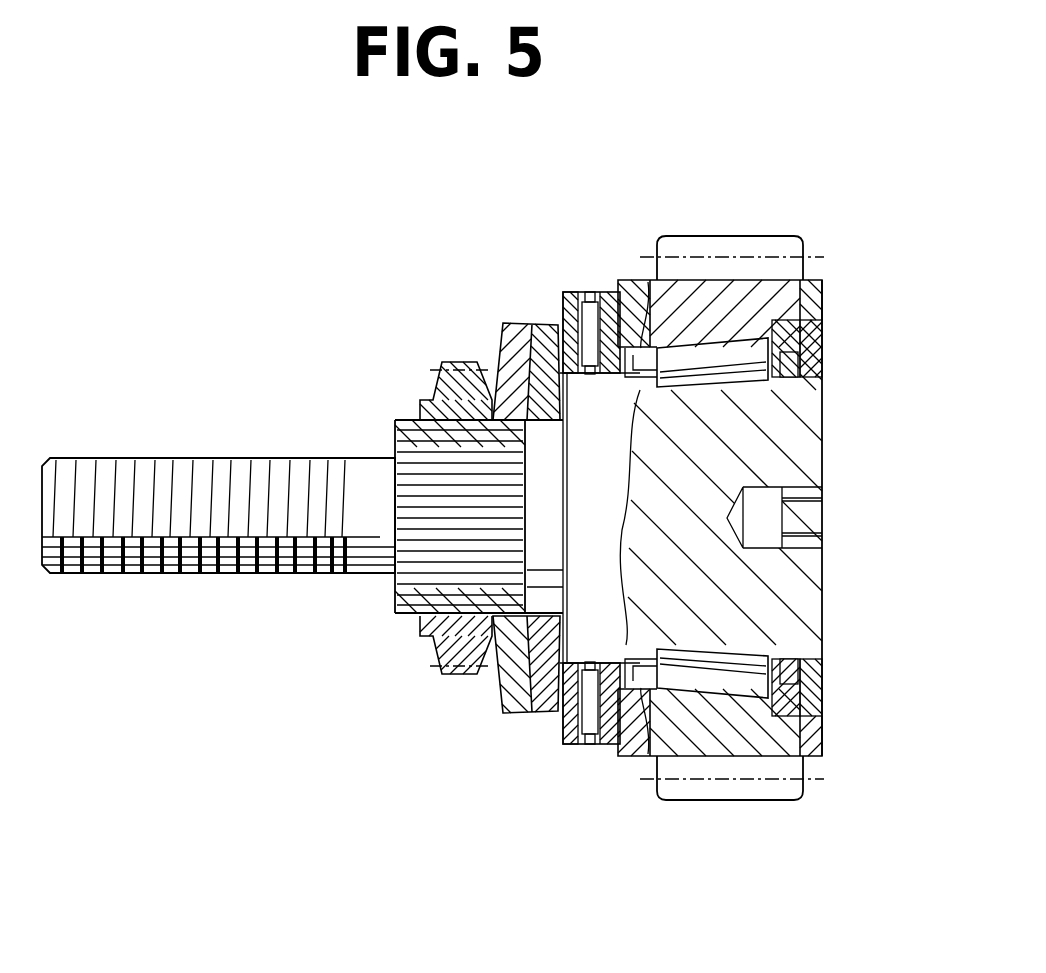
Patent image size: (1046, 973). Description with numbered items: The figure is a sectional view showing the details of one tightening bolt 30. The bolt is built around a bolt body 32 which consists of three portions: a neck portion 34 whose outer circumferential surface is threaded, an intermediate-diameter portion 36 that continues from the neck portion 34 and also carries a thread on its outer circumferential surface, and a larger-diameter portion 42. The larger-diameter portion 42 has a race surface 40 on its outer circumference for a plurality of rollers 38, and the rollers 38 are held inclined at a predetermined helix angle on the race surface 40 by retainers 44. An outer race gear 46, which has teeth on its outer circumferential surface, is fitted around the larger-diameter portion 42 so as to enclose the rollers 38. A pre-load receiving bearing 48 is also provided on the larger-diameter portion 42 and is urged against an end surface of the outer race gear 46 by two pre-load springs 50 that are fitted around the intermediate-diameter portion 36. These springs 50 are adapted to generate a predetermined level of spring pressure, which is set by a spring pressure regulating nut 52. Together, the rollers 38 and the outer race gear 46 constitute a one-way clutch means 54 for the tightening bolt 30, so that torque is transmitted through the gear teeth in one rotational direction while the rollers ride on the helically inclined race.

The tightening bolt 30 is at (376, 797).
The bolt body 32 is at (347, 594).
The neck portion 34 is at (240, 457).
The intermediate-diameter portion 36 is at (412, 470).
The rollers 38 is at (735, 400).
The race surface 40 is at (735, 385).
The larger-diameter portion 42 is at (793, 583).
The retainers 44 is at (628, 292).
The outer race gear 46 is at (822, 287).
The pre-load receiving bearing 48 is at (562, 308).
The pre-load springs 50 is at (548, 322).
The spring pressure regulating nut 52 is at (440, 645).
The one-way clutch means 54 is at (716, 226).